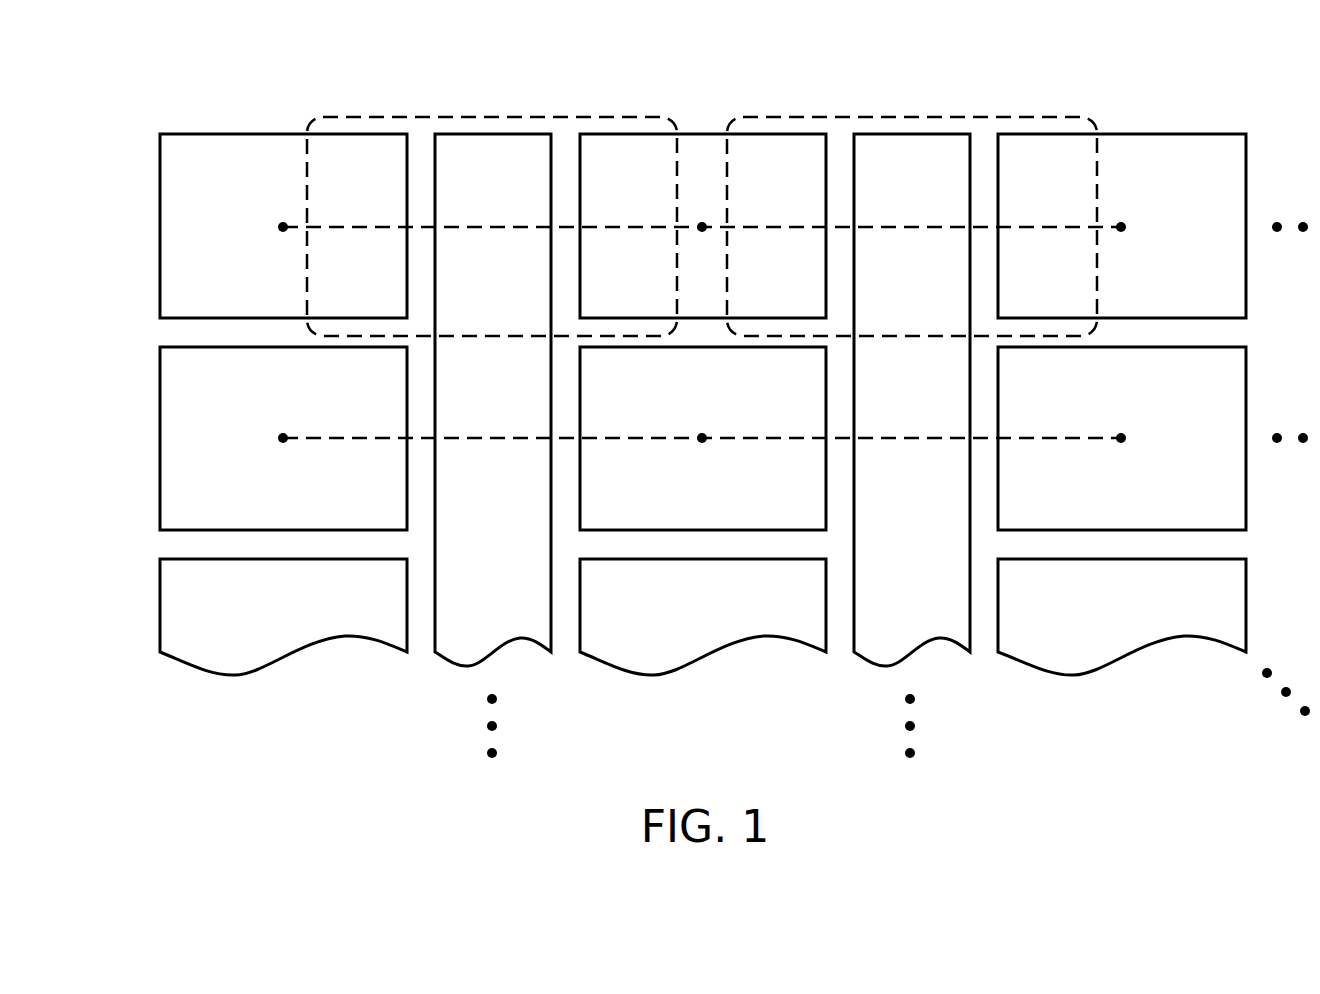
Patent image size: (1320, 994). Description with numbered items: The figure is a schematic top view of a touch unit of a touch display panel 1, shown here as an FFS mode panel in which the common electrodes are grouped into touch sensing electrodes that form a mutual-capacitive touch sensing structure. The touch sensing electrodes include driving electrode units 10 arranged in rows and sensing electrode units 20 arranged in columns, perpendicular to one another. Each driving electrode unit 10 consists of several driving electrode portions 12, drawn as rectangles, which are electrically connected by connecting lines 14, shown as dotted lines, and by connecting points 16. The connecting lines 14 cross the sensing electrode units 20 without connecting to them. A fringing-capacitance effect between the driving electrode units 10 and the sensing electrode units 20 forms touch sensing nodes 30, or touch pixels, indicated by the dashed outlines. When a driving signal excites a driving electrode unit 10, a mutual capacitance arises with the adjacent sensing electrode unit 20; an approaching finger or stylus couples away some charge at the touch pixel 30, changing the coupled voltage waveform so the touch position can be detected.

The touch display panel 1 is at (64, 84).
The driving electrode unit 10 is at (150, 228).
The driving electrode portion 12 is at (240, 134).
The connecting line 14 is at (508, 225).
The connecting point 16 is at (283, 227).
The sensing electrode unit 20 is at (492, 134).
The touch sensing node 30 is at (633, 117).